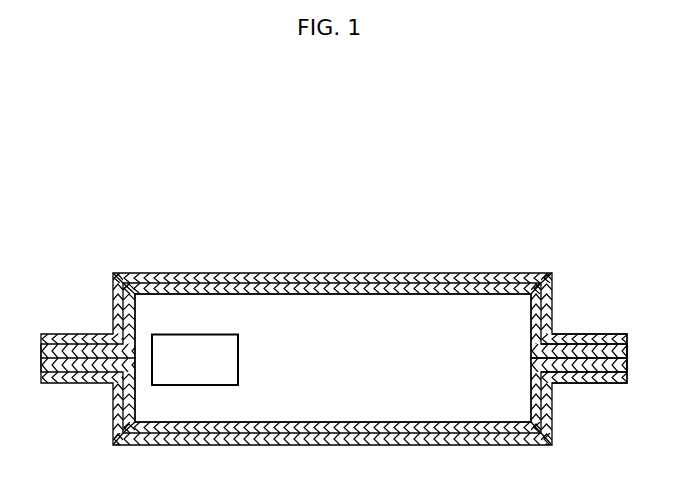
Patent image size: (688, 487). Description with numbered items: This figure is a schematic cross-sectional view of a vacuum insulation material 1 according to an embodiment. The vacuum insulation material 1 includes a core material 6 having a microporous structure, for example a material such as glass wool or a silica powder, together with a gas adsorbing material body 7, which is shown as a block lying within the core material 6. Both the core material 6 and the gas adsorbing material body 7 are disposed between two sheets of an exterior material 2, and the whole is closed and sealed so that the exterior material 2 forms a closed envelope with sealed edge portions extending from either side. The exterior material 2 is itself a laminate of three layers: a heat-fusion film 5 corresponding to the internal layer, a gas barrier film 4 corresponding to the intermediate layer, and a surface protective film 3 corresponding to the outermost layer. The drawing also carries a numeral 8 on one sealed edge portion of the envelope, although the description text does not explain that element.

The vacuum insulation material 1 is at (517, 199).
The exterior material 2 is at (412, 232).
The surface protective film 3 is at (408, 277).
The gas barrier film 4 is at (373, 283).
The heat-fusion film 5 is at (335, 292).
The core material 6 is at (259, 307).
The gas adsorbing material body 7 is at (190, 341).
The electrode lead tab 8 is at (597, 334).